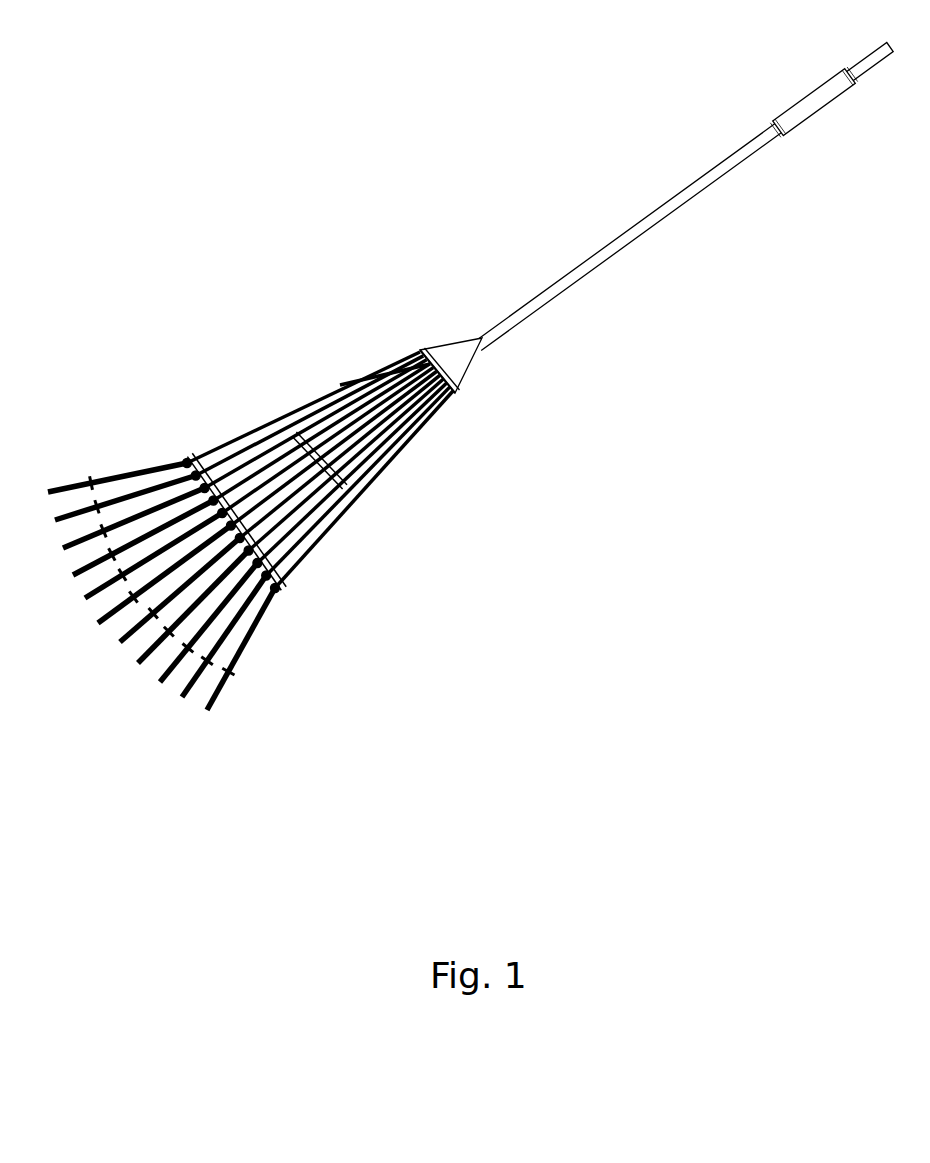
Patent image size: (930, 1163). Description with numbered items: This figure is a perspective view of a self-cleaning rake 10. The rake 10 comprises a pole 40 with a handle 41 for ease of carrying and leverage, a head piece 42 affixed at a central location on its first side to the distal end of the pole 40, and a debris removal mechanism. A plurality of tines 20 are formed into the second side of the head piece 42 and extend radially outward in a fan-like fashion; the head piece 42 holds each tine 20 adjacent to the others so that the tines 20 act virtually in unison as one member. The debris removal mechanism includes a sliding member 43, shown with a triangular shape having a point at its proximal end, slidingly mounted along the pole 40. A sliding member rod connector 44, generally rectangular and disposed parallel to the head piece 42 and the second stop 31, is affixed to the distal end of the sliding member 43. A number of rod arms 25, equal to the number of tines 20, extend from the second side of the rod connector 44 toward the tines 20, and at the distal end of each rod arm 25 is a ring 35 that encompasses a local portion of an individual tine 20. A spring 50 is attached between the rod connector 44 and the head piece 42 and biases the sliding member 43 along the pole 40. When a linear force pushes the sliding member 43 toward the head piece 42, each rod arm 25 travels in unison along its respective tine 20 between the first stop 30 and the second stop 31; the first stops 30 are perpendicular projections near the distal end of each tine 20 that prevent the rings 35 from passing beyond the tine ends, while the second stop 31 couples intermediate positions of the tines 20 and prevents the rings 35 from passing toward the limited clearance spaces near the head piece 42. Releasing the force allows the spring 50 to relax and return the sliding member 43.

The self-cleaning rake 10 is at (735, 315).
The tines 20 is at (121, 642).
The rod arms 25 is at (388, 366).
The first stop 30 is at (91, 483).
The second stop 31 is at (292, 575).
The ring 35 is at (183, 460).
The pole 40 is at (725, 180).
The handle 41 is at (818, 92).
The head piece 42 is at (297, 437).
The sliding member 43 is at (453, 352).
The sliding member rod connector 44 is at (454, 398).
The spring 50 is at (340, 385).